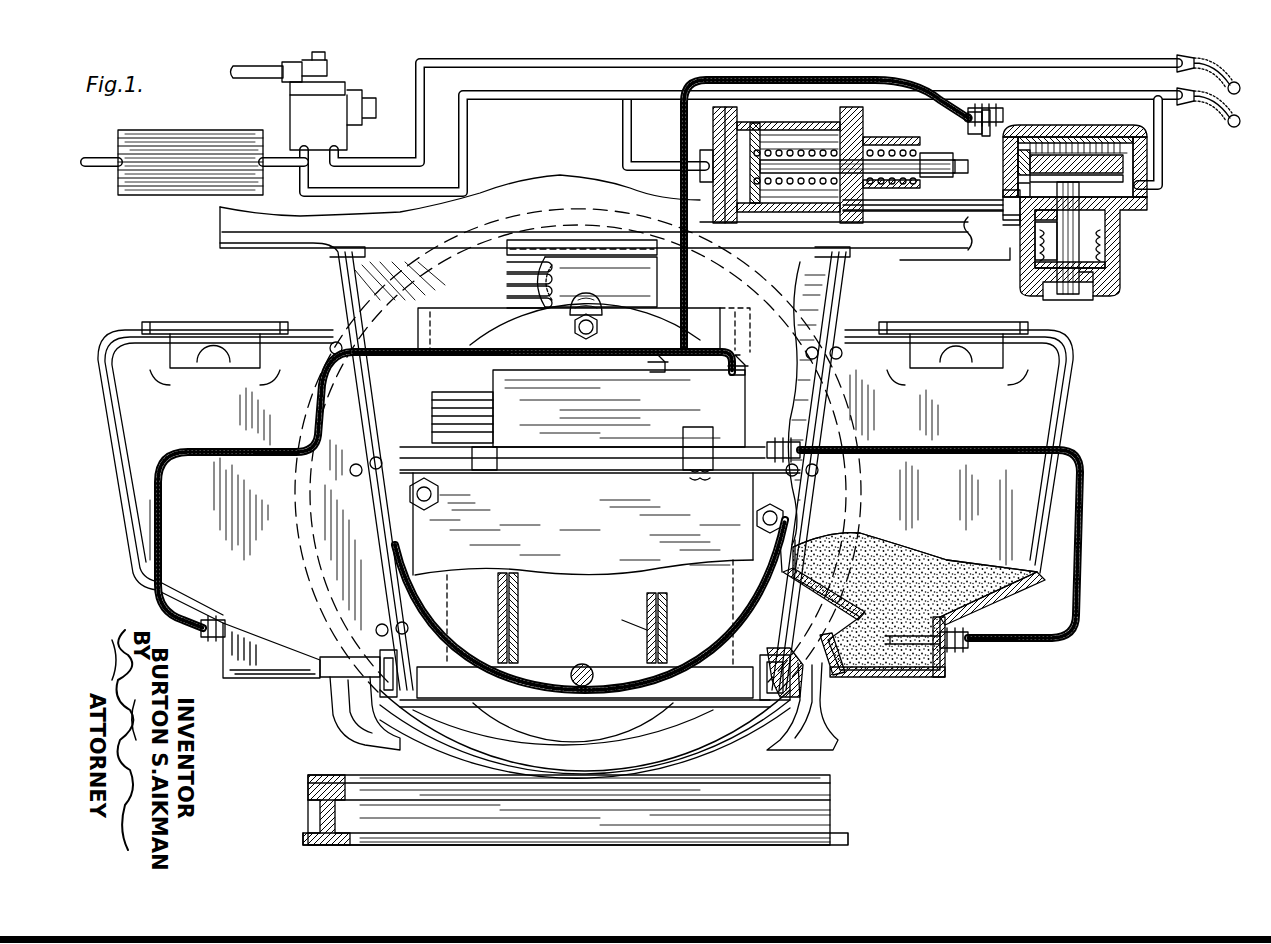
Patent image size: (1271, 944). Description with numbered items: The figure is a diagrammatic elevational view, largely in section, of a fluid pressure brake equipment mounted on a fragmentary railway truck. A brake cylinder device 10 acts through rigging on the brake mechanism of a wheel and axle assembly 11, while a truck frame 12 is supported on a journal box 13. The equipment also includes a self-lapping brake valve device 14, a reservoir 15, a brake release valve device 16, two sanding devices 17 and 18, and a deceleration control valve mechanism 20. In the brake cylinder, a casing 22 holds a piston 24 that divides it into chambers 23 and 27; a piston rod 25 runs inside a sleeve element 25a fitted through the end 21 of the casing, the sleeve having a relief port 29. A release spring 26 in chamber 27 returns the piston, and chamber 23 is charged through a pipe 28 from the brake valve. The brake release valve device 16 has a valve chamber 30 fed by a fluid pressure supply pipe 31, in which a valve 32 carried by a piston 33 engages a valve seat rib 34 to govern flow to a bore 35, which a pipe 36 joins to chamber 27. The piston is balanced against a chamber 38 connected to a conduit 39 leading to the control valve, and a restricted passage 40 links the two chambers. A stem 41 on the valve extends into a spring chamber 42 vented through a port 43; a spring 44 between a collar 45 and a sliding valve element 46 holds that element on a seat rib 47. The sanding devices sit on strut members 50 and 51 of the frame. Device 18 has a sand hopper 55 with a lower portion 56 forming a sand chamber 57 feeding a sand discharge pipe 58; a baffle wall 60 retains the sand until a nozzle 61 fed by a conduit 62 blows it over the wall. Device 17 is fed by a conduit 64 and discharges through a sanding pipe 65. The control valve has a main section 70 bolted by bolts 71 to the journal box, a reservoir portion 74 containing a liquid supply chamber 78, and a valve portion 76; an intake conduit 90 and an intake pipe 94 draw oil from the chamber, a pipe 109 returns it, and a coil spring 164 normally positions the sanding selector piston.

The brake cylinder device 10 is at (877, 133).
The wheel and axle assembly 11 is at (700, 742).
The truck frame 12 is at (866, 240).
The journal box 13 is at (458, 320).
The self-lapping brake valve device 14 is at (330, 95).
The reservoir 15 is at (233, 150).
The brake release valve device 16 is at (1148, 212).
The sanding device 17 is at (226, 678).
The sanding device 18 is at (980, 625).
The deceleration control valve mechanism 20 is at (457, 402).
The end of the casing 21 is at (910, 145).
The casing 22 is at (788, 155).
The chamber 23 is at (706, 154).
The piston 24 is at (778, 151).
The piston rod 25 is at (960, 118).
The sleeve element 25a is at (920, 82).
The release spring 26 is at (830, 191).
The chamber 27 is at (845, 140).
The pipe 28 is at (613, 63).
The relief port 29 is at (838, 208).
The valve chamber 30 is at (1018, 160).
The fluid pressure supply pipe 31 is at (1165, 108).
The valve 32 is at (1115, 186).
The piston 33 is at (1100, 152).
The valve seat rib 34 is at (1018, 190).
The bore 35 is at (1005, 225).
The pipe 36 is at (990, 207).
The chamber 38 is at (1090, 137).
The conduit 39 is at (979, 135).
The restricted passage 40 is at (1020, 135).
The stem 41 is at (1090, 290).
The spring chamber 42 is at (1144, 244).
The port 43 is at (1108, 266).
The spring 44 is at (1040, 250).
The collar 45 is at (1100, 280).
The valve element 46 is at (1040, 222).
The seat rib 47 is at (1098, 228).
The strut member 50 is at (340, 290).
The strut member 51 is at (836, 313).
The sand hopper 55 is at (1040, 580).
The portion 56 is at (822, 608).
The sand chamber 57 is at (912, 680).
The sand discharge pipe 58 is at (830, 730).
The baffle wall 60 is at (845, 680).
The nozzle 61 is at (905, 620).
The conduit 62 is at (1075, 478).
The conduit 64 is at (225, 448).
The sanding pipe 65 is at (340, 712).
The main section 70 is at (503, 338).
The bolts 71 is at (592, 318).
The reservoir portion 74 is at (467, 650).
The valve portion 76 is at (742, 370).
The liquid supply chamber 78 is at (630, 660).
The intake conduit 90 is at (498, 605).
The intake pipe 94 is at (667, 620).
The pipe 109 is at (617, 621).
The coil spring 164 is at (700, 478).